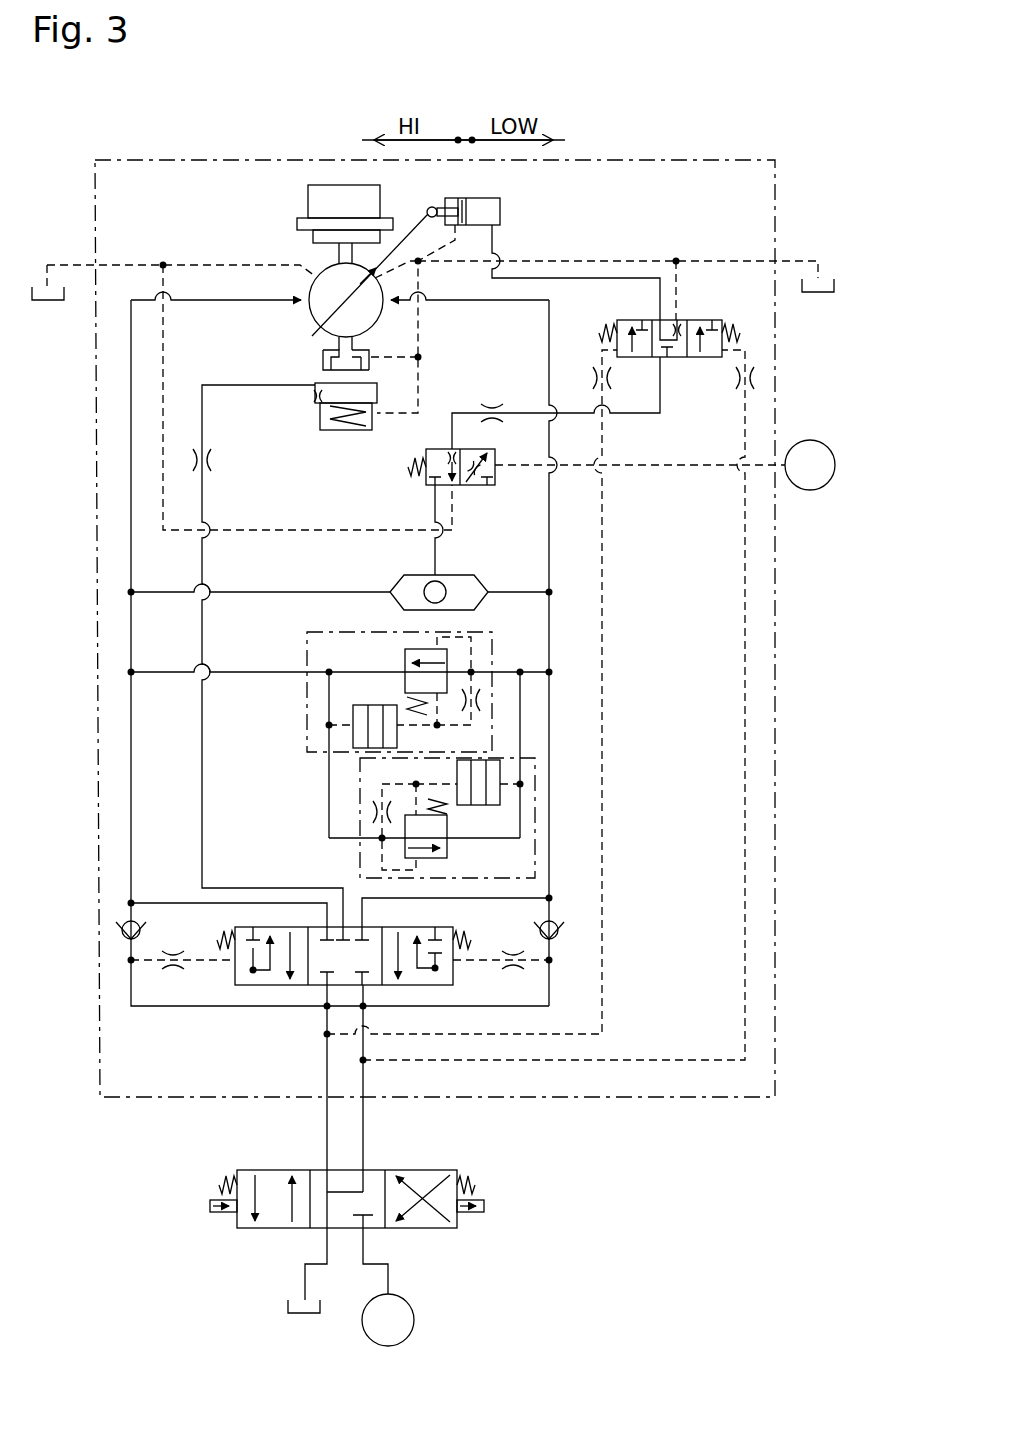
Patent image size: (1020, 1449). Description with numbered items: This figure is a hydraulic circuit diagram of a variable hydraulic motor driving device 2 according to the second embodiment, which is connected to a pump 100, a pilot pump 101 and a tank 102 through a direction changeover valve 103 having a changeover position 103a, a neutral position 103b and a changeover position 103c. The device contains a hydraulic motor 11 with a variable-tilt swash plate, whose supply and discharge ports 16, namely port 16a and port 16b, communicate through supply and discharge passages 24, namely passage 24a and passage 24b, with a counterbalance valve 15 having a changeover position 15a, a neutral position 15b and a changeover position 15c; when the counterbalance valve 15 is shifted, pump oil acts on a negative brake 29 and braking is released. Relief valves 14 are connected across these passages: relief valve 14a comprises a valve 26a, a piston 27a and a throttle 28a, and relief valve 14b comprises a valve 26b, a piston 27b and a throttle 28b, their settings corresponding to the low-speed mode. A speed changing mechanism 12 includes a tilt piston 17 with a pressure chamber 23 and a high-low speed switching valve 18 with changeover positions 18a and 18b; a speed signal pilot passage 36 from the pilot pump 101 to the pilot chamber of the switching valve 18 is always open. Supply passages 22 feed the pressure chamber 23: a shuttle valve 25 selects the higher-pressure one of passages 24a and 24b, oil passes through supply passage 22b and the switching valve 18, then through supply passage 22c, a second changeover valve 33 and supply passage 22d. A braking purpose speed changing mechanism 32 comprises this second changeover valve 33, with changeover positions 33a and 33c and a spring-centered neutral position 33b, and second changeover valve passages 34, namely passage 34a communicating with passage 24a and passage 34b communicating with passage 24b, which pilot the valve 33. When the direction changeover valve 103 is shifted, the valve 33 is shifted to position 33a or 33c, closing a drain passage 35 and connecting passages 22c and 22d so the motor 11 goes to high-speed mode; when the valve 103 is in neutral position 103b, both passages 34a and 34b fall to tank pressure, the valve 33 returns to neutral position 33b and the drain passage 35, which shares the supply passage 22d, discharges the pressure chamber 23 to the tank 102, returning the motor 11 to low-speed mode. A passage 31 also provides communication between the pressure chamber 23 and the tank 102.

The variable hydraulic motor driving device 2 is at (742, 140).
The hydraulic motor 11 is at (305, 278).
The speed changing mechanism 12 is at (497, 351).
The relief valves 14 is at (395, 752).
The relief valve 14a is at (374, 732).
The relief valve 14b is at (439, 775).
The counterbalance valve 15 is at (318, 1002).
The changeover position 15a is at (262, 985).
The neutral position 15b is at (322, 988).
The changeover position 15c is at (420, 982).
The supply and discharge ports 16 is at (340, 316).
The supply and discharge port 16a is at (305, 306).
The supply and discharge port 16b is at (387, 306).
The tilt piston 17 is at (545, 204).
The high-low speed switching valve 18 is at (434, 449).
The changeover position 18a is at (425, 450).
The changeover position 18b is at (470, 487).
The supply passages 22 is at (585, 405).
The supply passage 22b is at (445, 553).
The supply passage 22c is at (633, 422).
The supply passage 22d is at (690, 242).
The pressure chamber 23 is at (498, 216).
The supply and discharge passages 24 is at (370, 653).
The supply and discharge passage 24a is at (130, 772).
The supply and discharge passage 24b is at (553, 700).
The shuttle valve 25 is at (392, 580).
The valve 26a is at (405, 658).
The valve 26b is at (447, 850).
The piston 27a is at (353, 738).
The piston 27b is at (500, 782).
The throttle 28a is at (477, 698).
The throttle 28b is at (378, 812).
The negative brake 29 is at (313, 416).
The passage 31 is at (285, 530).
The braking purpose speed changing mechanism 32 is at (574, 692).
The second changeover valve 33 is at (711, 376).
The changeover position 33a is at (640, 360).
The neutral position 33b is at (667, 360).
The changeover position 33c is at (704, 360).
The second changeover valve passages 34 is at (539, 707).
The second changeover valve passage 34a is at (605, 598).
The second changeover valve passage 34b is at (745, 910).
The drain passage 35 is at (704, 263).
The speed signal pilot passage 36 is at (681, 472).
The pump 100 is at (428, 1320).
The pilot pump 101 is at (812, 493).
The tank 102 is at (47, 302).
The direction changeover valve 103 is at (390, 1142).
The changeover position 103a is at (265, 1230).
The neutral position 103b is at (376, 1168).
The changeover position 103c is at (428, 1230).